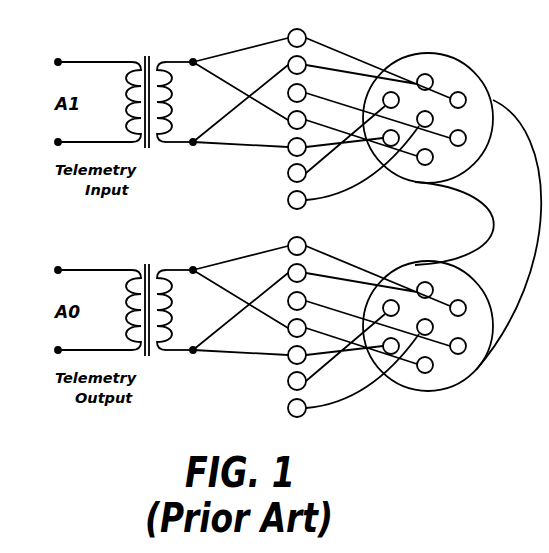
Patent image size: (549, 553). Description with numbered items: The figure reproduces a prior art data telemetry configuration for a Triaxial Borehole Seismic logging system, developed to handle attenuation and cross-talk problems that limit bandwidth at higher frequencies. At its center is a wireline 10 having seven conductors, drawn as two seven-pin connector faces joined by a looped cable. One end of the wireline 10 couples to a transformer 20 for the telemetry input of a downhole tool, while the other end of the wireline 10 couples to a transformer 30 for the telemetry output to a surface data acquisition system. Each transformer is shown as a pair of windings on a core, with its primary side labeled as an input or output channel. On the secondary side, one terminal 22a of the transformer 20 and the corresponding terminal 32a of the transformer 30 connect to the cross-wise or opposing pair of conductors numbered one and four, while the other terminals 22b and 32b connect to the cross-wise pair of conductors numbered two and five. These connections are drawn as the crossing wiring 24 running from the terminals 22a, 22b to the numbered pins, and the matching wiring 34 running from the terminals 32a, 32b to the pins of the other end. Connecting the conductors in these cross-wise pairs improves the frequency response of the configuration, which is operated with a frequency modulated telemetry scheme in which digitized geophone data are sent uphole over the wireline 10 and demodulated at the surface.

The wireline 10 is at (493, 97).
The transformer 20 is at (143, 42).
The terminal 22a is at (193, 60).
The terminal 22b is at (193, 144).
The connector wiring 24 is at (255, 46).
The transformer 30 is at (143, 250).
The terminal 32a is at (193, 268).
The terminal 32b is at (193, 352).
The connector wiring 34 is at (255, 254).